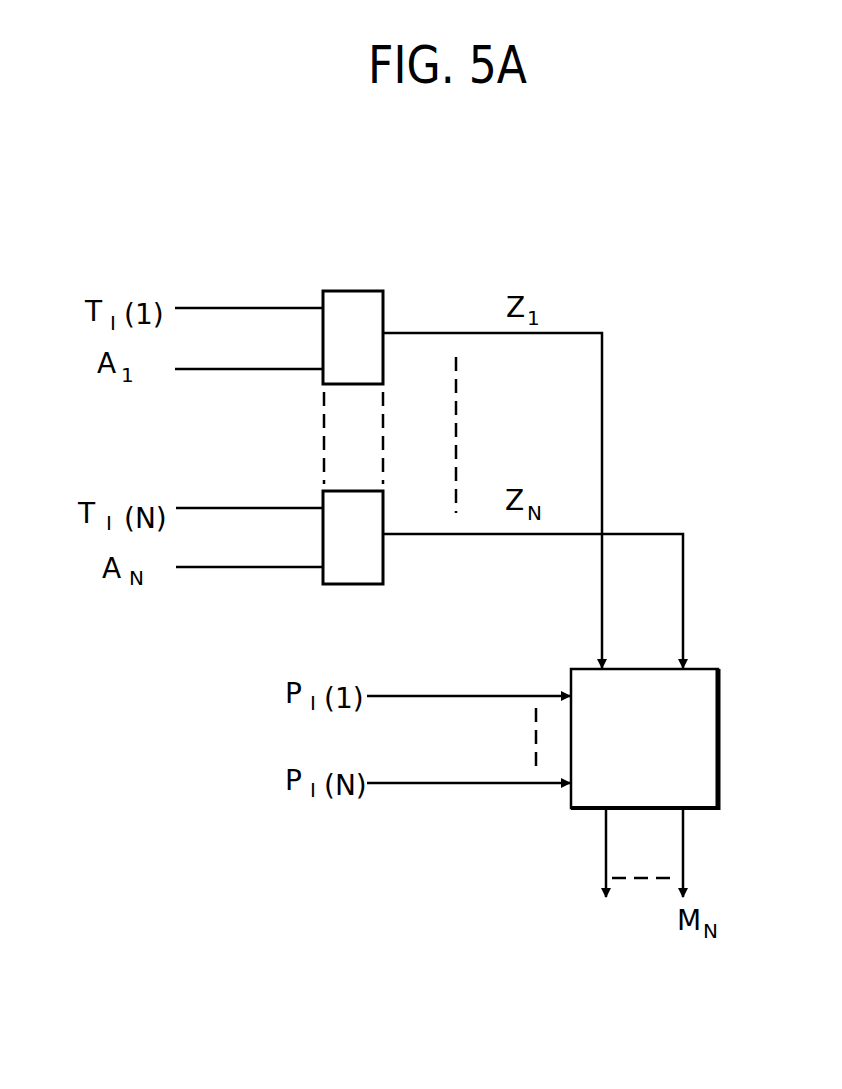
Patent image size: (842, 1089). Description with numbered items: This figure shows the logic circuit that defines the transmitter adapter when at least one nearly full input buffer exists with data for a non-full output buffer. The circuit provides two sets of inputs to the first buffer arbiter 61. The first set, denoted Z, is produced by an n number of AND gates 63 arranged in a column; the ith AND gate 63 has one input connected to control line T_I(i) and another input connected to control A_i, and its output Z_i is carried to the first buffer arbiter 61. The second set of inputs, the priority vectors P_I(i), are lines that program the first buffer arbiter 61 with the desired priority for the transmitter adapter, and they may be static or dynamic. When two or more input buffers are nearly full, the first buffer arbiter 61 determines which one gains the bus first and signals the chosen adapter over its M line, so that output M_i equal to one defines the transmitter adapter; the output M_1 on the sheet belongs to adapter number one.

The AND gates 63 is at (385, 298).
The first buffer arbiter 61 is at (722, 703).
The output M1 of buffer arbiter 1 is at (616, 876).